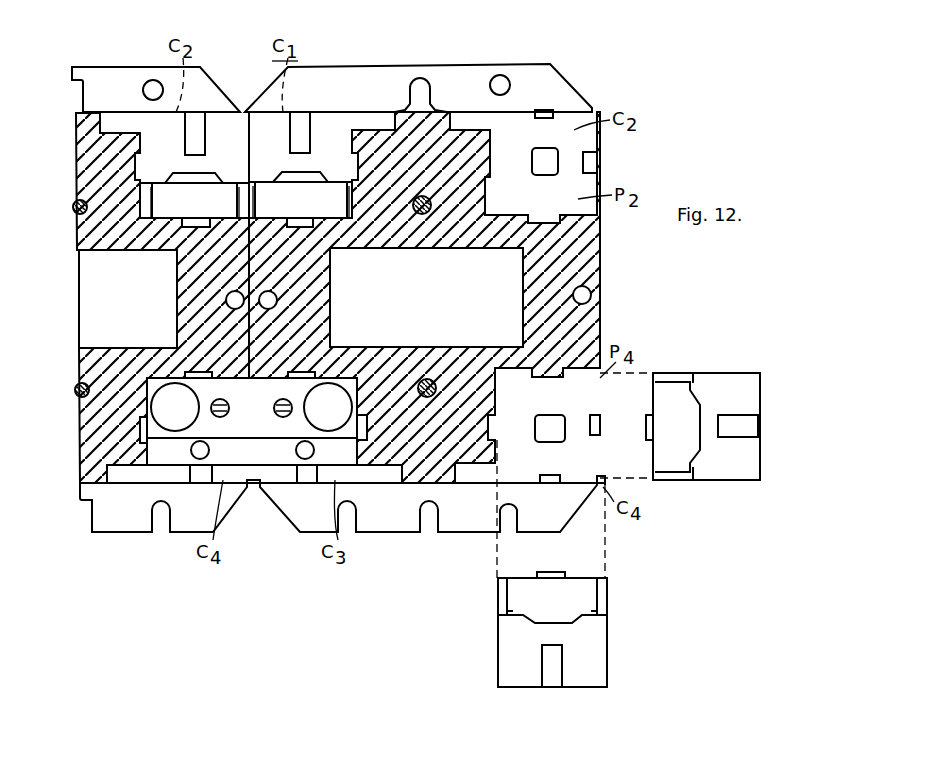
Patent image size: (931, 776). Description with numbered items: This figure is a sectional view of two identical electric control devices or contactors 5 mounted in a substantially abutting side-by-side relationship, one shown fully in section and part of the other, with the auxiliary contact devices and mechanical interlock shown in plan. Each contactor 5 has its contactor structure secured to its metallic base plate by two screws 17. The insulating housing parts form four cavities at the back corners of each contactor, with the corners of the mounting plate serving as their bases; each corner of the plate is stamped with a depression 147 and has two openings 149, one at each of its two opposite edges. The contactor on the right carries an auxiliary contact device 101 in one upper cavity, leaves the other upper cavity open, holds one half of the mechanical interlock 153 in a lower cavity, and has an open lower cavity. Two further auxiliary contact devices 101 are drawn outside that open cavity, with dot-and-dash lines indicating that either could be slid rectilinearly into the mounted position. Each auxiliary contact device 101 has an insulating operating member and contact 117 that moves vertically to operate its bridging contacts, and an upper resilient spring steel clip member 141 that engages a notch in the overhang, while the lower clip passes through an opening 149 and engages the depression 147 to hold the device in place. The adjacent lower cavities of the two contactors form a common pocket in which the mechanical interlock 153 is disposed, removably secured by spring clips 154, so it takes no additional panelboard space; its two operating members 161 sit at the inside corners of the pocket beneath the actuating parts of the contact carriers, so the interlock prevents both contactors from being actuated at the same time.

The electric control device or contactor 5 is at (110, 317).
The screw 17 is at (76, 208).
The auxiliary contact device 101 is at (209, 209).
The insulating operating member and contact 117 is at (176, 192).
The upper resilient spring steel clip member 141 is at (205, 143).
The depression 147 is at (547, 172).
The opening 149 is at (541, 110).
The mechanical interlock 153 is at (267, 426).
The spring clip 154 is at (196, 480).
The operating member 161 is at (190, 397).